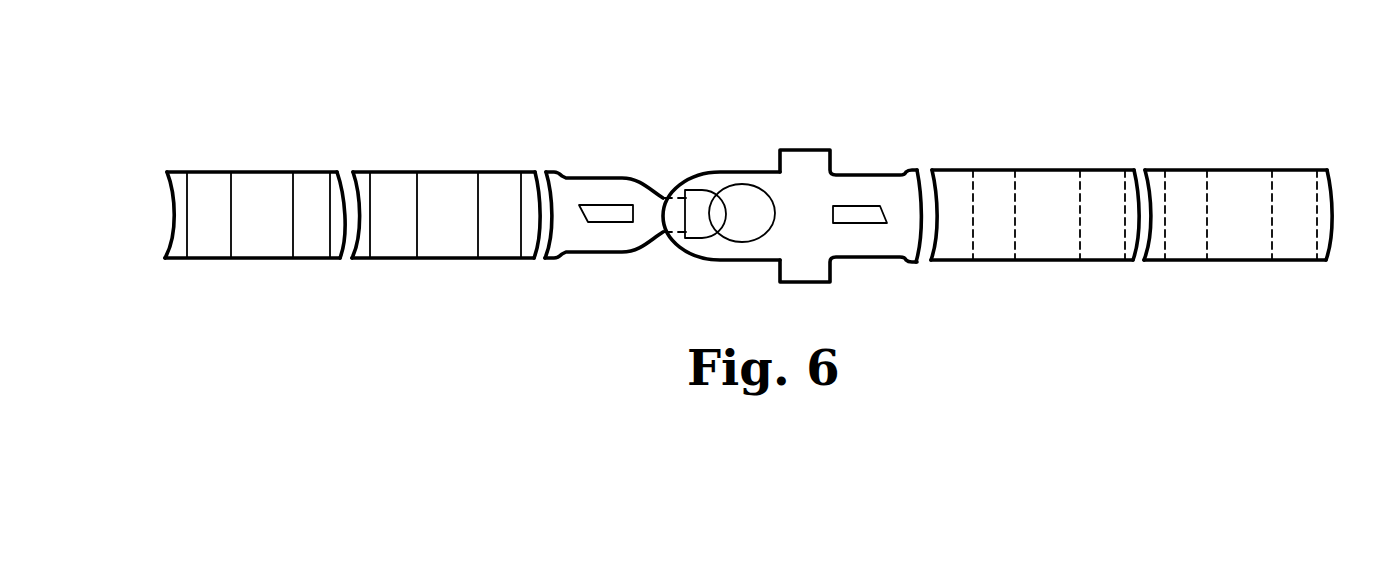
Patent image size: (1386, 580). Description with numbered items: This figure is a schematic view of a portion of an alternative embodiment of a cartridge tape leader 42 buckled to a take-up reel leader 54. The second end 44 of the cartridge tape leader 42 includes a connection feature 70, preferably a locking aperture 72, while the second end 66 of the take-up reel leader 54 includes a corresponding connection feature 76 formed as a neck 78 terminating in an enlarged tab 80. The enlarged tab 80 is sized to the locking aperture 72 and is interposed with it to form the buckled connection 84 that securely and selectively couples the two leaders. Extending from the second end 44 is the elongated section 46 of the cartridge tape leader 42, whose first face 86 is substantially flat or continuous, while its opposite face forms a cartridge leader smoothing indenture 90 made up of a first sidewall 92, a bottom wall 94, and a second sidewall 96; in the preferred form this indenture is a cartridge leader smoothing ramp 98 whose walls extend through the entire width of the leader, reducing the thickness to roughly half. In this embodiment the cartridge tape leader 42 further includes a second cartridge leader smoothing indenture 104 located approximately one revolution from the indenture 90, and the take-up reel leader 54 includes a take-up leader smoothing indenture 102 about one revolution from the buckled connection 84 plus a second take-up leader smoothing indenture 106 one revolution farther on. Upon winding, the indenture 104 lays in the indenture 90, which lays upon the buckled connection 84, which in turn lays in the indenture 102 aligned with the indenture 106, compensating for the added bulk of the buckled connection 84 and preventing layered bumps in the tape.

The cartridge tape leader 42 is at (1007, 92).
The second end 44 is at (847, 175).
The elongated section 46 is at (1085, 345).
The take-up reel leader 54 is at (349, 128).
The second end 66 is at (587, 178).
The connection feature 70 is at (737, 172).
The locking aperture 72 is at (750, 232).
The corresponding connection feature 76 is at (655, 240).
The neck 78 is at (662, 197).
The enlarged tab 80 is at (697, 232).
The buckled connection 84 is at (684, 152).
The first face 86 is at (952, 180).
The cartridge leader smoothing indenture 90 is at (1040, 133).
The first sidewall 92 is at (307, 180).
The bottom wall 94 is at (256, 180).
The second sidewall 96 is at (197, 177).
The cartridge leader smoothing ramp 98 is at (1045, 177).
The take-up leader smoothing indenture 102 is at (445, 168).
The second cartridge leader smoothing indenture 104 is at (1240, 247).
The second take-up leader smoothing indenture 106 is at (258, 243).